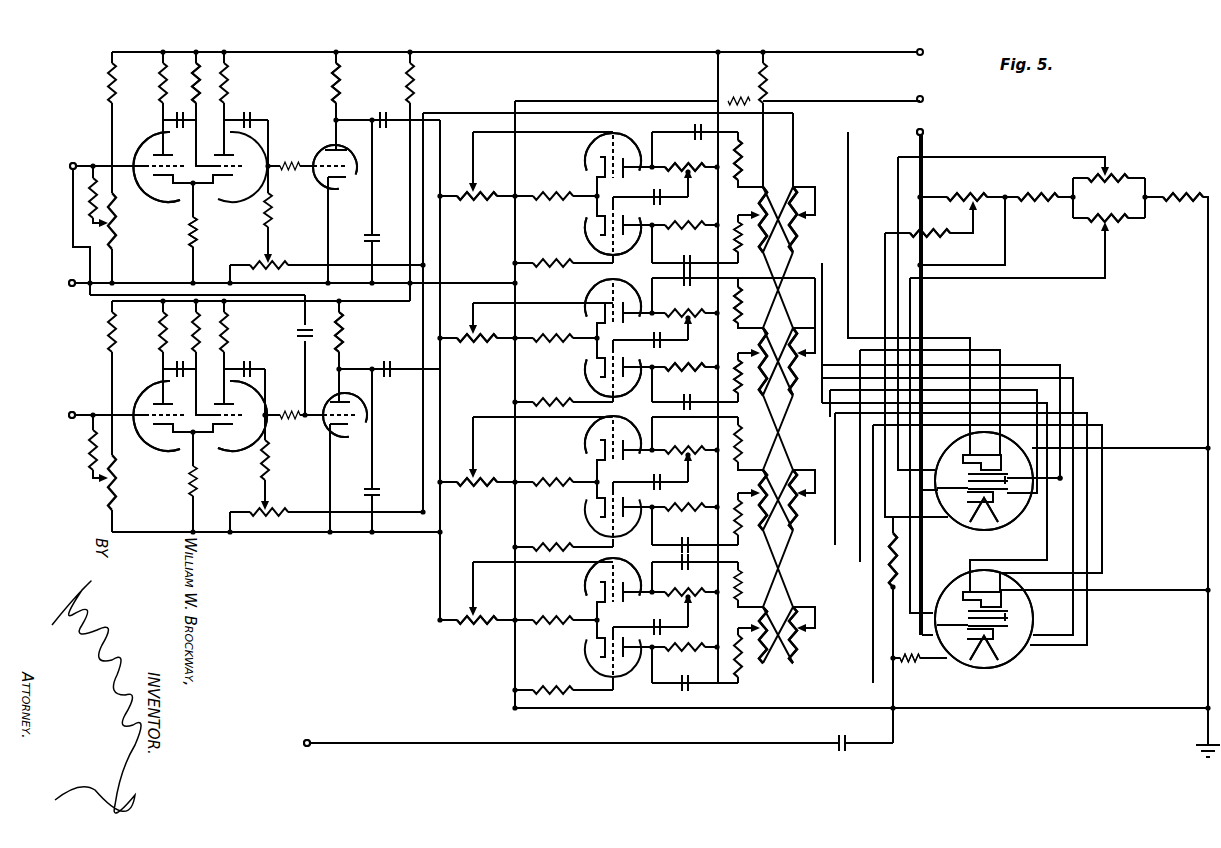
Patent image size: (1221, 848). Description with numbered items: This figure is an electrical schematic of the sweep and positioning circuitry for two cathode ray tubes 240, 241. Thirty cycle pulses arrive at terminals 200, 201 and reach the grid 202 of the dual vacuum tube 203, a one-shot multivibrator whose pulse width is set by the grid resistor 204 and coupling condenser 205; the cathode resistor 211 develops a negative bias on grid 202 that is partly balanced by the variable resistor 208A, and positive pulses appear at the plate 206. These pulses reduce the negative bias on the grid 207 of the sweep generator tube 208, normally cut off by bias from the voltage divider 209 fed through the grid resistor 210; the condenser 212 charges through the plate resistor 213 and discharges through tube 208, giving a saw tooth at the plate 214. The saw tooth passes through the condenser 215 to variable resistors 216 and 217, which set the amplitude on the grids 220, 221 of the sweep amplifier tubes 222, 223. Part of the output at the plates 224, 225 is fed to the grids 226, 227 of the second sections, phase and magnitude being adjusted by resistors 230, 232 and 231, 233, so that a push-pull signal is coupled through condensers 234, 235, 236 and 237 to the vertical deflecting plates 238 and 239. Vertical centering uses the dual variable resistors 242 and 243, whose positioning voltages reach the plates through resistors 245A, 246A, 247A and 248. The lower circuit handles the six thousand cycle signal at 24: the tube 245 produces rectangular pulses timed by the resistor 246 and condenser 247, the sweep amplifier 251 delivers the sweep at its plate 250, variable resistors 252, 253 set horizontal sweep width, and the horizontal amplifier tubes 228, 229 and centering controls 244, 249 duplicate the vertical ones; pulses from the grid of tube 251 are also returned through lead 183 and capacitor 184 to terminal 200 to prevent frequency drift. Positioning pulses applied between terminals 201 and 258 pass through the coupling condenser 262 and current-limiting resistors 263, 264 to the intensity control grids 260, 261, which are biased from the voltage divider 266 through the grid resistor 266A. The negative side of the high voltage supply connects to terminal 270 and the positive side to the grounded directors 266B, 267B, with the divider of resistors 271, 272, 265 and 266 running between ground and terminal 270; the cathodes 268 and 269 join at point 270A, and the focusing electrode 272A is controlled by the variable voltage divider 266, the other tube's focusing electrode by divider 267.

The input terminal 200 is at (72, 164).
The lead 183 is at (71, 207).
The terminal 201 is at (70, 283).
The dual vacuum tube 203 is at (143, 147).
The grid 202 is at (156, 200).
The variable resistor 208A is at (118, 229).
The cathode resistor 211 is at (193, 233).
The coupling condenser 205 is at (182, 114).
The grid resistor 204 is at (196, 70).
The plate 206 is at (252, 134).
The sweep generator tube 208 is at (313, 152).
The grid 207 is at (290, 170).
The grid resistor 210 is at (275, 206).
The voltage divider 209 is at (282, 260).
The plate resistor 213 is at (334, 81).
The plate 214 is at (336, 142).
The condenser 215 is at (381, 115).
The condenser 212 is at (374, 234).
The signal input point 24 is at (69, 412).
The capacitor 184 is at (303, 328).
The condenser 247 is at (177, 368).
The resistor 246 is at (198, 358).
The tube 245 is at (230, 445).
The plate 250 is at (343, 398).
The sweep amplifier 251 is at (350, 440).
The variable resistor 216 is at (470, 204).
The variable resistor 217 is at (470, 345).
The variable resistor 252 is at (470, 489).
The variable resistor 253 is at (470, 627).
The grid 220 is at (596, 147).
The sweep amplifier tube 222 is at (602, 161).
The plate 224 is at (615, 166).
The grid 226 is at (596, 217).
The resistor 232 is at (706, 163).
The resistor 230 is at (680, 187).
The coupling condenser 234 is at (702, 122).
The resistor 245A is at (746, 165).
The resistor 246A is at (733, 242).
The dual voltage control variable resistor 242 is at (800, 240).
The coupling condenser 235 is at (675, 268).
The coupling condenser 236 is at (700, 282).
The resistor 247A is at (746, 306).
The grid 221 is at (604, 290).
The sweep amplifier tube 223 is at (600, 313).
The plate 225 is at (615, 321).
The resistor 231 is at (686, 332).
The resistor 233 is at (688, 356).
The resistor 248 is at (735, 367).
The grid 227 is at (605, 355).
The coupling condenser 237 is at (697, 394).
The dual voltage control variable resistor 243 is at (791, 383).
The horizontal amplifier tube 228 is at (604, 440).
The horizontal beam-centering control 244 is at (798, 528).
The horizontal amplifier tube 229 is at (604, 580).
The horizontal beam-centering control 249 is at (803, 646).
The terminal 270 is at (922, 132).
The point on voltage divider 270A is at (1010, 193).
The resistor 265 is at (990, 194).
The grid resistor 266A is at (952, 227).
The resistor 272 is at (1036, 202).
The voltage divider 266 is at (1110, 174).
The variable voltage divider 267 is at (1113, 227).
The resistor 271 is at (1205, 193).
The vertical deflecting plate 238 is at (995, 455).
The focusing electrode 272A is at (929, 448).
The grounded director 266B is at (1064, 480).
The cathode ray tube 240 is at (1038, 507).
The intensity control grid 260 is at (968, 502).
The cathode 268 is at (1000, 510).
The series current-limiting resistor 263 is at (888, 582).
The vertical deflecting plate 239 is at (1000, 595).
The grounded director 267B is at (1030, 625).
The cathode ray tube 241 is at (1033, 652).
The series current-limiting resistor 264 is at (905, 662).
The intensity control grid 261 is at (975, 640).
The cathode 269 is at (1005, 650).
The coupling condenser 262 is at (846, 759).
The terminal 258 is at (310, 740).